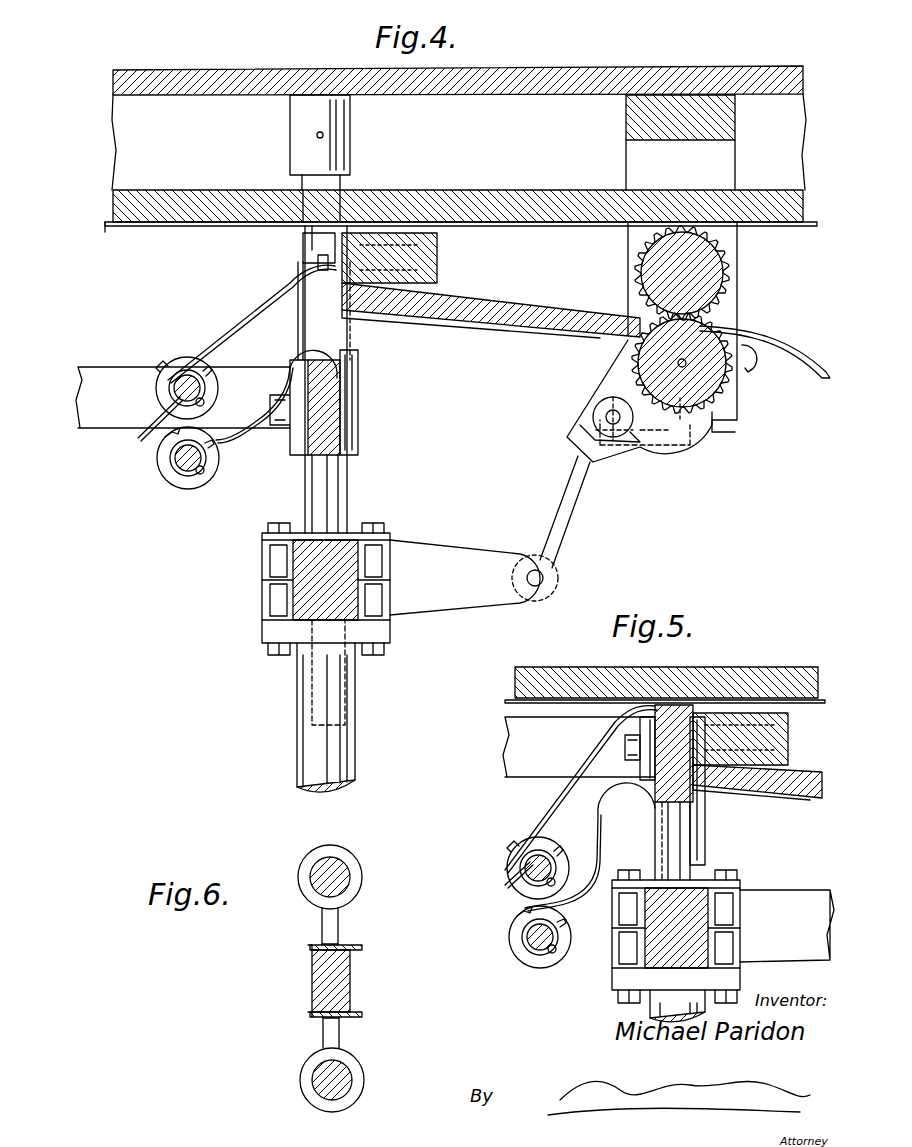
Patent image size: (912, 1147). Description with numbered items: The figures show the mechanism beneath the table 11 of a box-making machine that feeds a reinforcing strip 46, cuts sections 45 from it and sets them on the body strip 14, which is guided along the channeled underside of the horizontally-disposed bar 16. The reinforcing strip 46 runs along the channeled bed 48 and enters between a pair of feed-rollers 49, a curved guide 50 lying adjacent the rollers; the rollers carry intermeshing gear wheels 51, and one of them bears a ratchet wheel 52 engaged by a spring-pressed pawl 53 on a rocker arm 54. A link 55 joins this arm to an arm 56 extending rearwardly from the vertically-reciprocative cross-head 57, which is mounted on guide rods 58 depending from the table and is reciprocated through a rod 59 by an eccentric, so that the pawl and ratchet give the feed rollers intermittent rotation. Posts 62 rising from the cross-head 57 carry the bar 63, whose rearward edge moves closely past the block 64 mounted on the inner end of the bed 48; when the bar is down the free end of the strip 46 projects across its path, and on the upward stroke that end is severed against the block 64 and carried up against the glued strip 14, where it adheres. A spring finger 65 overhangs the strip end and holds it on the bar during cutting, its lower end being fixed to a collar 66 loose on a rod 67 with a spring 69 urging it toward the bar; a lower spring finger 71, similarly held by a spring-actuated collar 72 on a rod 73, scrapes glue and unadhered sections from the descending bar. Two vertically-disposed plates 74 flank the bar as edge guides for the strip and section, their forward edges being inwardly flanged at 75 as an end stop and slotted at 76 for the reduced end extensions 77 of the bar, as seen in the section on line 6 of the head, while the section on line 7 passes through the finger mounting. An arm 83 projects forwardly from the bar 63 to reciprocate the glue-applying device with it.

In FIG. 4, the section line 6— 6 is at (290, 345).
In FIG. 4, the section line 7— 7 is at (143, 110).
In FIG. 4, the table 11 is at (614, 78).
In FIG. 4, the strip of paper or pasteboard 14 is at (108, 226).
In FIG. 5, the strip of paper or pasteboard 14 is at (505, 700).
In FIG. 4, the horizontally-disposed bar 16 is at (530, 200).
In FIG. 4, the reinforcing section 45 is at (462, 220).
In FIG. 5, the reinforcing section 45 is at (650, 695).
In FIG. 4, the reinforcing strip 46 is at (505, 300).
In FIG. 5, the reinforcing strip 46 is at (820, 772).
In FIG. 4, the channeled bed 48 is at (504, 322).
In FIG. 5, the channeled bed 48 is at (812, 792).
In FIG. 4, the feed-rollers 49 is at (730, 280).
In FIG. 4, the curved guide 50 is at (800, 350).
In FIG. 4, the intermeshing gear wheels 51 is at (732, 262).
In FIG. 4, the ratchet wheel 52 is at (702, 420).
In FIG. 4, the spring-pressed pawl 53 is at (662, 450).
In FIG. 4, the rocker arm 54 is at (610, 378).
In FIG. 4, the link 55 is at (558, 490).
In FIG. 4, the arm 56 is at (456, 550).
In FIG. 5, the arm 56 is at (812, 895).
In FIG. 4, the cross-head 57 is at (352, 540).
In FIG. 5, the cross-head 57 is at (655, 952).
In FIG. 4, the guide rods 58 is at (345, 185).
In FIG. 4, the rod 59 is at (298, 733).
In FIG. 5, the rod 59 is at (660, 1010).
In FIG. 4, the posts 62 is at (305, 488).
In FIG. 5, the posts 62 is at (672, 842).
In FIG. 4, the bar 63 is at (360, 417).
In FIG. 5, the bar 63 is at (700, 705).
In FIG. 6, the bar 63 is at (352, 980).
In FIG. 4, the block 64 is at (440, 248).
In FIG. 5, the block 64 is at (770, 713).
In FIG. 4, the spring finger 65 is at (262, 290).
In FIG. 5, the spring finger 65 is at (592, 760).
In FIG. 4, the collar 66 is at (158, 398).
In FIG. 5, the collar 66 is at (518, 884).
In FIG. 4, the rod 67 is at (140, 438).
In FIG. 5, the rod 67 is at (520, 862).
In FIG. 4, the spring 69 is at (186, 372).
In FIG. 5, the spring 69 is at (548, 855).
In FIG. 4, the spring finger 71 is at (270, 405).
In FIG. 5, the spring finger 71 is at (600, 806).
In FIG. 4, the spring-actuated collar 72 is at (162, 472).
In FIG. 5, the spring-actuated collar 72 is at (520, 955).
In FIG. 5, the rod 73 is at (540, 945).
In FIG. 4, the vertically-disposed plates 74 is at (318, 258).
In FIG. 5, the vertically-disposed plates 74 is at (700, 825).
In FIG. 6, the vertically-disposed plates 74 is at (362, 946).
In FIG. 4, the inward flanges 75 is at (303, 322).
In FIG. 5, the inward flanges 75 is at (655, 818).
In FIG. 6, the inward flanges 75 is at (310, 948).
In FIG. 4, the slots 76 is at (340, 324).
In FIG. 6, the slots 76 is at (336, 944).
In FIG. 6, the reduced end extensions 77 is at (322, 922).
In FIG. 4, the arm 83 is at (114, 365).
In FIG. 5, the arm 83 is at (579, 747).